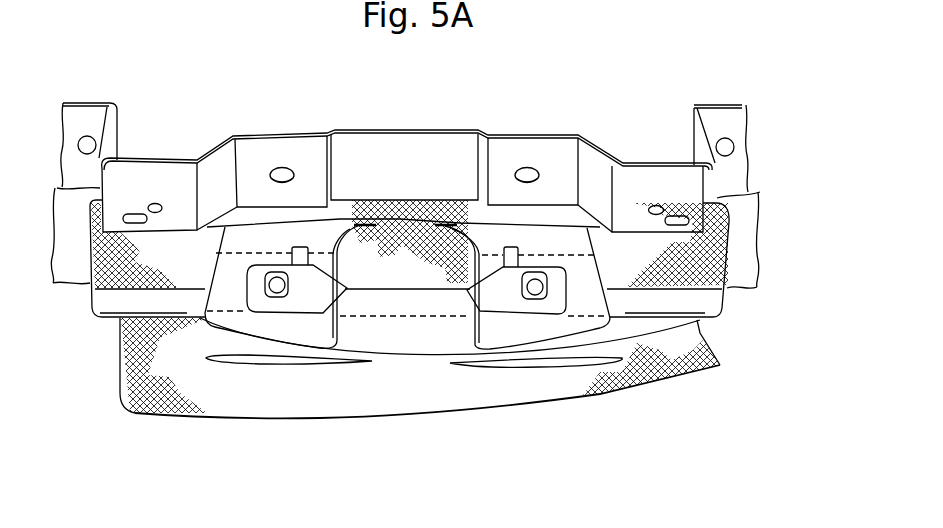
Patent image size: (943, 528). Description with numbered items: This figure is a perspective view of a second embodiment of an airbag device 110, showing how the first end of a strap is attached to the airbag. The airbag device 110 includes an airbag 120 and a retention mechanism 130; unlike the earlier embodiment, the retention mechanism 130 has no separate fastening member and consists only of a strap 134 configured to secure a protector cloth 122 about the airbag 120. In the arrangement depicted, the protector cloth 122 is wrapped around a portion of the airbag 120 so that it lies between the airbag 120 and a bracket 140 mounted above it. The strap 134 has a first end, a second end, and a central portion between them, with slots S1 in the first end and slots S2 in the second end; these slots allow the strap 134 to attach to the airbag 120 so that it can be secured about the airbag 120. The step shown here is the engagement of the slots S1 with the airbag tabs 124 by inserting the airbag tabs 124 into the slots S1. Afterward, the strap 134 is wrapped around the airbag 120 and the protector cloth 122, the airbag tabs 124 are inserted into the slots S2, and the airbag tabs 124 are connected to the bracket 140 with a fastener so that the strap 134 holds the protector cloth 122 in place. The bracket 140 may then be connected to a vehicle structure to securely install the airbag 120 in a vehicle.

The airbag device 110 is at (671, 74).
The airbag 120 is at (750, 258).
The protector cloth 122 is at (723, 303).
The airbag tabs 124 is at (320, 335).
The retention mechanism 130 is at (108, 358).
The strap 134 is at (368, 416).
The bracket 140 is at (212, 162).
The slots S1 is at (362, 222).
The slots S2 is at (253, 362).